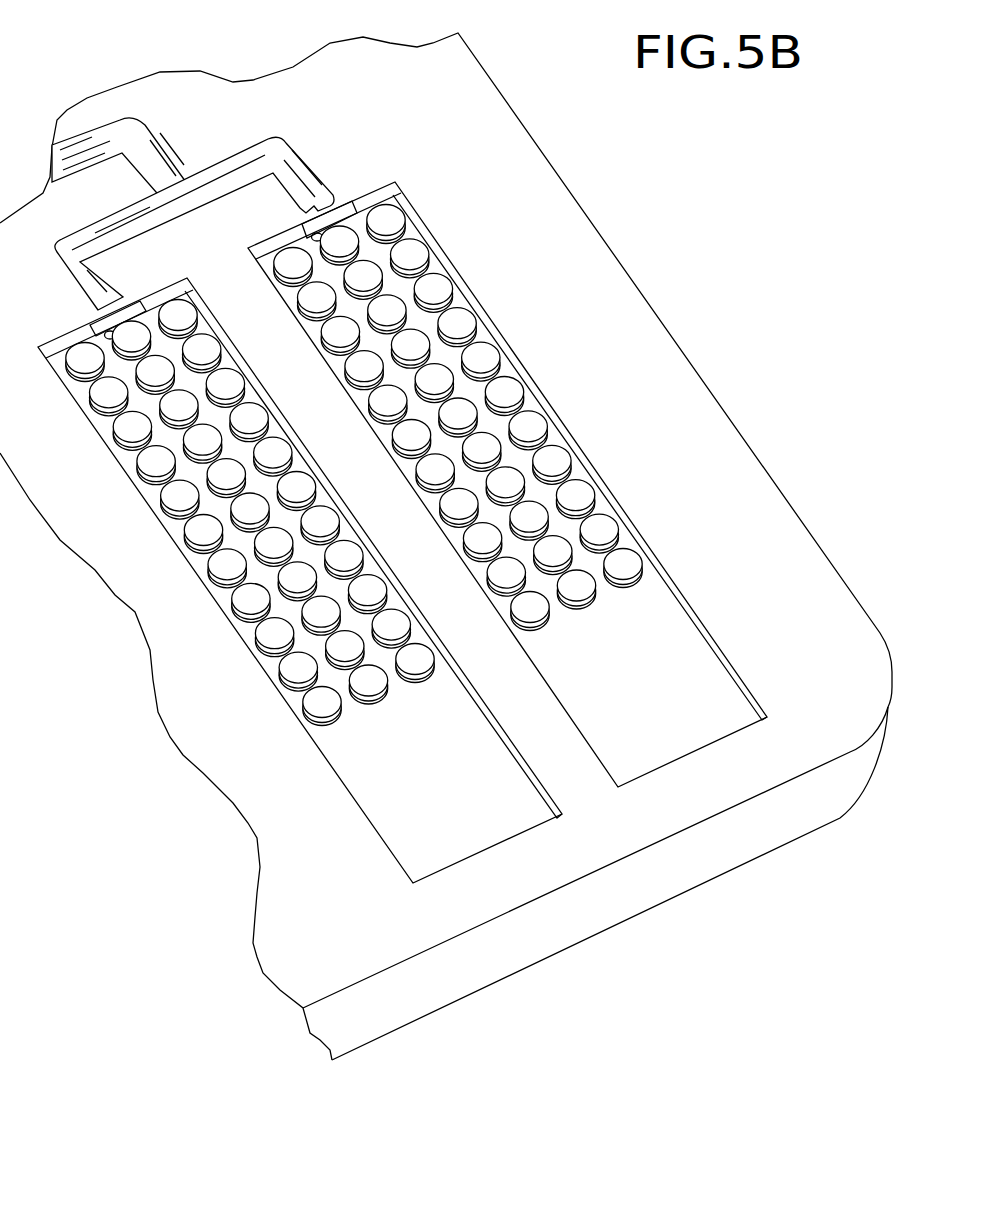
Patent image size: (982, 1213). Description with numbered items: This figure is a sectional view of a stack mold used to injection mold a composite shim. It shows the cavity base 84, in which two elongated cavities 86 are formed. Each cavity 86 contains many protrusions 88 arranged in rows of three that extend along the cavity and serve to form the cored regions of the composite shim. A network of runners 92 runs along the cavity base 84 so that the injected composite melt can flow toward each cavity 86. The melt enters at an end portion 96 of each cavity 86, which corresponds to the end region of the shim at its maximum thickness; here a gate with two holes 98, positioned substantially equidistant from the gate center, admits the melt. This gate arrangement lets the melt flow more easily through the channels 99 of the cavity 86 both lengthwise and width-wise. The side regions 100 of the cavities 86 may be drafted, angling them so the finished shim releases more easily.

The cavity base 84 is at (647, 461).
The cavity 86 is at (421, 811).
The protrusion 88 is at (624, 560).
The runner 92 is at (283, 155).
The end portion 96 is at (162, 280).
The hole 98 is at (101, 342).
The channel 99 is at (613, 590).
The side region 100 is at (325, 428).